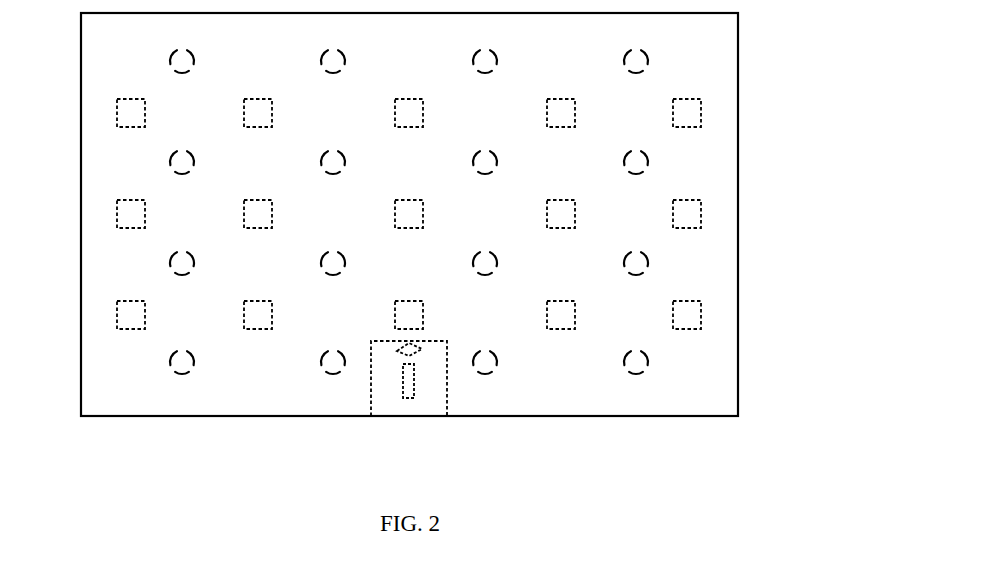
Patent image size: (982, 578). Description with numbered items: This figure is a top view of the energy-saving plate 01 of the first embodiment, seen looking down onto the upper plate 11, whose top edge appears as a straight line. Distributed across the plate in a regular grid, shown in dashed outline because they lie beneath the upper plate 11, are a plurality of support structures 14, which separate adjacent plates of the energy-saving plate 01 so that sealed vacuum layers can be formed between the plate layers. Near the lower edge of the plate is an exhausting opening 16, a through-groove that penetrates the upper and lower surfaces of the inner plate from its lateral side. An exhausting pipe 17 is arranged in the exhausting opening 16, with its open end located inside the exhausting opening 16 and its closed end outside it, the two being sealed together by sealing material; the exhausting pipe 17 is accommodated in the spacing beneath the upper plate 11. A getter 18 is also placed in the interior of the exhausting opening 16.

The energy-saving plate 01 is at (739, 479).
The upper plate 11 is at (573, 395).
The support structures 14 is at (257, 315).
The exhausting opening 16 is at (385, 377).
The exhausting pipe 17 is at (410, 398).
The getter 18 is at (410, 352).